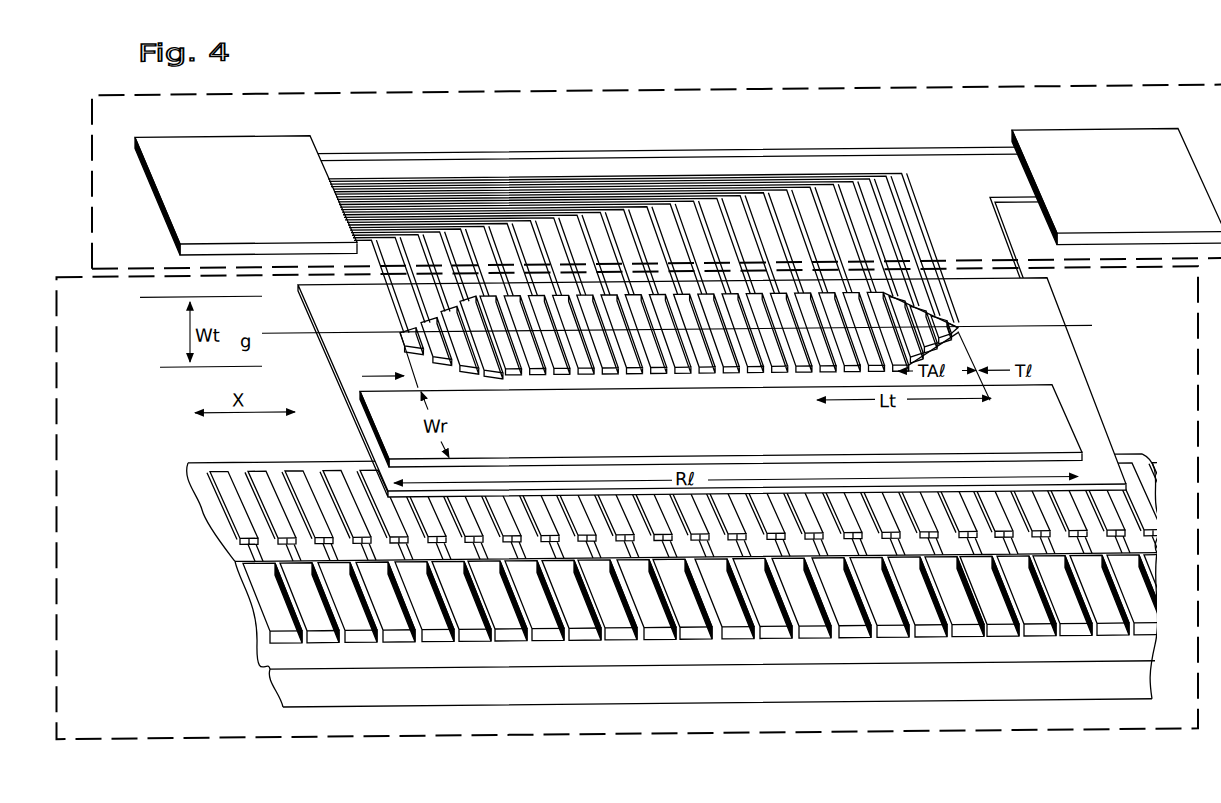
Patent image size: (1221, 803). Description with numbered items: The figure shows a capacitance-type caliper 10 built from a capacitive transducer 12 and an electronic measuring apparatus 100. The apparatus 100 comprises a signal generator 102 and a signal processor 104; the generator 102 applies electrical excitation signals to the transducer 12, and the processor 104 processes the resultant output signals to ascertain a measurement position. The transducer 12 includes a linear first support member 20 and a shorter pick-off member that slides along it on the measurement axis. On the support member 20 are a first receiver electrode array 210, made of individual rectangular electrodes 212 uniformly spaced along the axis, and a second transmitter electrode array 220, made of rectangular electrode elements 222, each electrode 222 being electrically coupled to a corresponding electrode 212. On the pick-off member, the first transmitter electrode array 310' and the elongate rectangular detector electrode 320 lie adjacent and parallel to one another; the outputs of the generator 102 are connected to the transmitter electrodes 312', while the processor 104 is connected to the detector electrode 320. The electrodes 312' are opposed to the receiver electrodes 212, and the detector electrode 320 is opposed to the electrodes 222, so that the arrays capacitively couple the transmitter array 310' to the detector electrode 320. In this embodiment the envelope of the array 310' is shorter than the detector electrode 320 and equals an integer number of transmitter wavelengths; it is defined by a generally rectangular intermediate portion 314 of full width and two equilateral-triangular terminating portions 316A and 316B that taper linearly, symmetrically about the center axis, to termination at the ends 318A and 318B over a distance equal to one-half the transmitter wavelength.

The caliper 10 is at (586, 34).
The electronic measuring apparatus 100 is at (791, 91).
The signal generator 102 is at (302, 156).
The signal processor 104 is at (1138, 134).
The capacitive transducer 12 is at (345, 734).
The first scale or support member 20 is at (460, 686).
The first receiver electrode array 210 is at (652, 490).
The first receiver electrodes 212 is at (262, 467).
The second transmitter electrode array 220 is at (669, 627).
The second transmitter electrodes 222 is at (280, 608).
The first transmitter electrode array 310' is at (712, 387).
The first transmitter electrodes 312' is at (677, 298).
The intermediate portion 314 is at (677, 358).
The terminating portion 316A is at (466, 356).
The terminating portion 316B is at (929, 322).
The end 318A is at (402, 328).
The end 318B is at (954, 337).
The detector electrode 320 is at (376, 439).